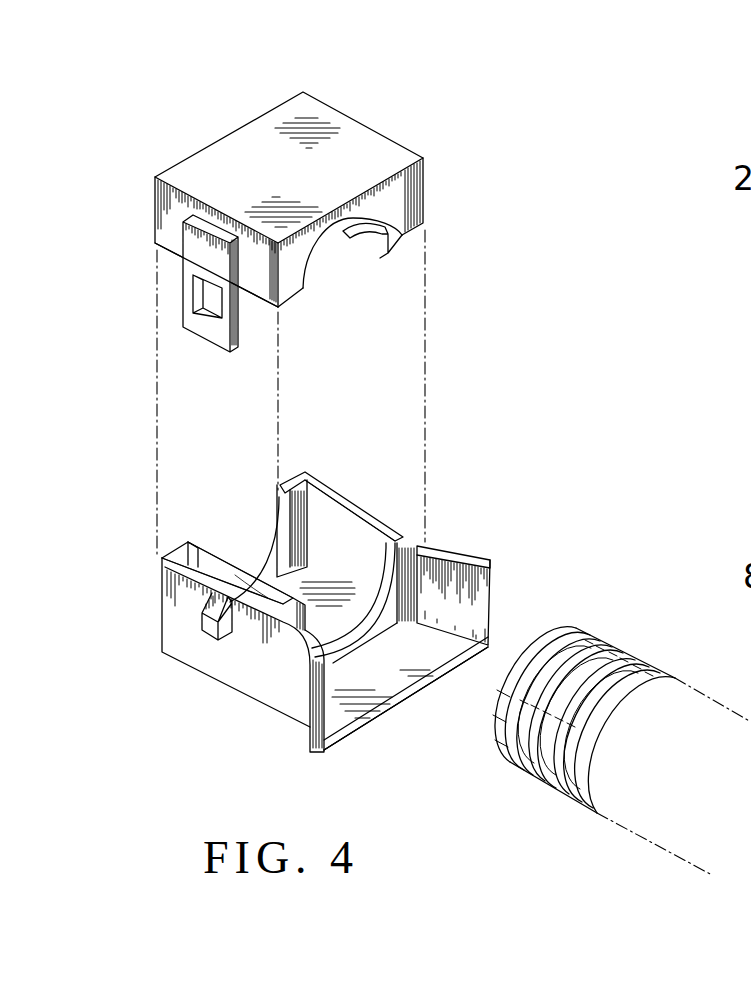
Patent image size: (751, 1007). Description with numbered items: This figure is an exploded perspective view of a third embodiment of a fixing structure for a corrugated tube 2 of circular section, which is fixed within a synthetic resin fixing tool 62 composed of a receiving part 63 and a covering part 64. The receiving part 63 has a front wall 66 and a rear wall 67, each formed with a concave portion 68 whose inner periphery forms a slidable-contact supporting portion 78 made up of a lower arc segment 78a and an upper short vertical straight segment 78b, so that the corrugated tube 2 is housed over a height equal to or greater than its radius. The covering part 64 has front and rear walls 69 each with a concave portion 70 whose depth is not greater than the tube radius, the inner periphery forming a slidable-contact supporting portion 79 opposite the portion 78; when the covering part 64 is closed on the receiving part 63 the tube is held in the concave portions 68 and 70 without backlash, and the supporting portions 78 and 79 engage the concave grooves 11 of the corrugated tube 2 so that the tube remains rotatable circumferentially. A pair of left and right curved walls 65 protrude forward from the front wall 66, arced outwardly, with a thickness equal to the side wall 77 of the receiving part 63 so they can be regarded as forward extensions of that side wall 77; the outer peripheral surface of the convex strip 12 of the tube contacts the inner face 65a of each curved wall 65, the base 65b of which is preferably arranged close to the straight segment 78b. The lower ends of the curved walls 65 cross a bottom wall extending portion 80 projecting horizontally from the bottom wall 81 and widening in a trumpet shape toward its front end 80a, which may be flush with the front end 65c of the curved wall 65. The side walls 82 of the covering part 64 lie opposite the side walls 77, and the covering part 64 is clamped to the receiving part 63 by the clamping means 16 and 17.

The corrugated tube 2 is at (668, 674).
The concave grooves 11 is at (512, 758).
The convex strip 12 is at (588, 630).
The clamping means 16 is at (203, 607).
The clamping means 17 is at (182, 293).
The fixing tool 62 is at (567, 247).
The receiving part 63 is at (425, 458).
The covering part 64 is at (429, 224).
The curved walls 65 is at (470, 550).
The inner face of curved wall 65a is at (488, 617).
The base of curved wall 65b is at (397, 491).
The front end of curved wall 65c is at (489, 603).
The front wall 66 is at (430, 562).
The rear wall 67 is at (298, 513).
The concave portions 68 is at (260, 545).
The front and rear walls of covering part 69 is at (425, 190).
The concave portion of covering part 70 is at (353, 240).
The side wall 77 is at (225, 657).
The slidable-contact supporting portion 78 is at (271, 540).
The lower arc segment 78a is at (260, 552).
The upper short vertical straight segment 78b is at (380, 568).
The slidable-contact supporting portion 79 is at (330, 245).
The bottom wall extending portion 80 is at (410, 690).
The front end of bottom wall extending portion 80a is at (418, 708).
The bottom wall 81 is at (270, 612).
The side walls of covering part 82 is at (170, 213).